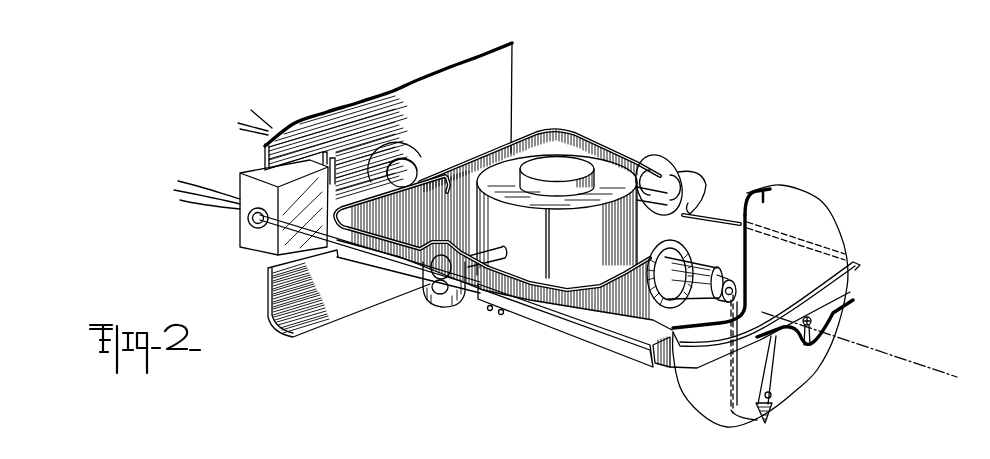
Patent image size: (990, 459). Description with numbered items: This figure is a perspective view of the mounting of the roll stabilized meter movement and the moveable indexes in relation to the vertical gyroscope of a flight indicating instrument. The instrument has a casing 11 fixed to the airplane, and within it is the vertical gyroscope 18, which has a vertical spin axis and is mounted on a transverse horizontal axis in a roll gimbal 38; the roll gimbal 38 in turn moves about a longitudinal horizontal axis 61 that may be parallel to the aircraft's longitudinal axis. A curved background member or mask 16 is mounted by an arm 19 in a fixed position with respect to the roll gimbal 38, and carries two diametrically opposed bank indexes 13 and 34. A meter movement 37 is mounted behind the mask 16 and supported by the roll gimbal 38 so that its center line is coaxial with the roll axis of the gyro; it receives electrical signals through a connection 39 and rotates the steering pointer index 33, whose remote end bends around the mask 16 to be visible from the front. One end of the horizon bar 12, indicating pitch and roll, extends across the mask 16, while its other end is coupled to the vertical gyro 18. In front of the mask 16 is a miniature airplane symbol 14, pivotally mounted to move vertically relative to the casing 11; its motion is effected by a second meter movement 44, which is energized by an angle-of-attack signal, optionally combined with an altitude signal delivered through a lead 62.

The casing 11 is at (507, 91).
The horizon bar 12 is at (862, 265).
The bank index 13 is at (770, 189).
The miniature airplane symbol 14 is at (852, 303).
The mask 16 is at (823, 212).
The vertical gyroscope 18 is at (610, 172).
The arm 19 is at (566, 340).
The steering pointer index 33 is at (770, 415).
The bank index 34 is at (774, 394).
The meter movement 37 is at (729, 287).
The roll gimbal 38 is at (632, 306).
The connection 39 is at (258, 120).
The meter movement 44 is at (247, 232).
The longitudinal horizontal axis 61 is at (957, 377).
The lead 62 is at (197, 191).